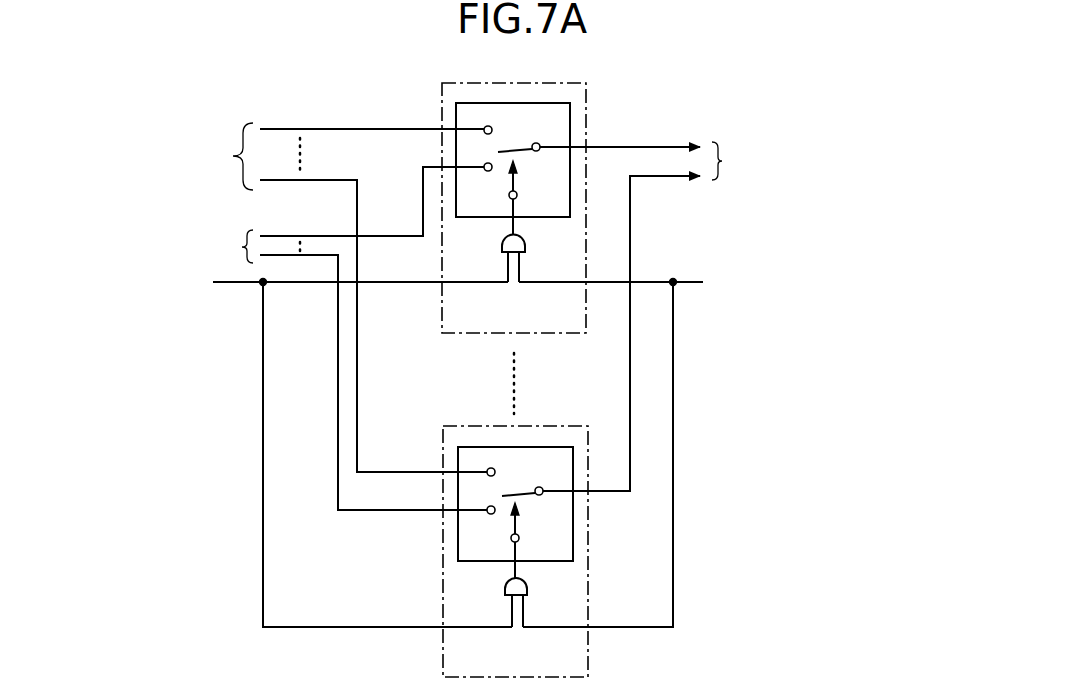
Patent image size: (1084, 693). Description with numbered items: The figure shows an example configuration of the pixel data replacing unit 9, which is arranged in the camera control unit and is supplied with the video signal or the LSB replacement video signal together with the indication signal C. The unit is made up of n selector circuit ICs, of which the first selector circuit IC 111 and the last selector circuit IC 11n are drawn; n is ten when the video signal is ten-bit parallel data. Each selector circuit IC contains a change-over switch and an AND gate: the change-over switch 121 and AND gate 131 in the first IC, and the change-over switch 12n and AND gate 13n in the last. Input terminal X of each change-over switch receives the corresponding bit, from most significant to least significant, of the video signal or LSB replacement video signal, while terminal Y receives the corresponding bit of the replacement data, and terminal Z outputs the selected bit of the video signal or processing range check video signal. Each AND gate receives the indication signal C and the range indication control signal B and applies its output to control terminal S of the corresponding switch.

The pixel data replacing unit 9 is at (672, 60).
The selector circuit IC 11n is at (586, 86).
The change-over switch 12n is at (570, 201).
The AND gate 13n is at (525, 243).
The selector circuit IC 111 is at (588, 646).
The change-over switch 121 is at (573, 540).
The AND gate 131 is at (527, 588).